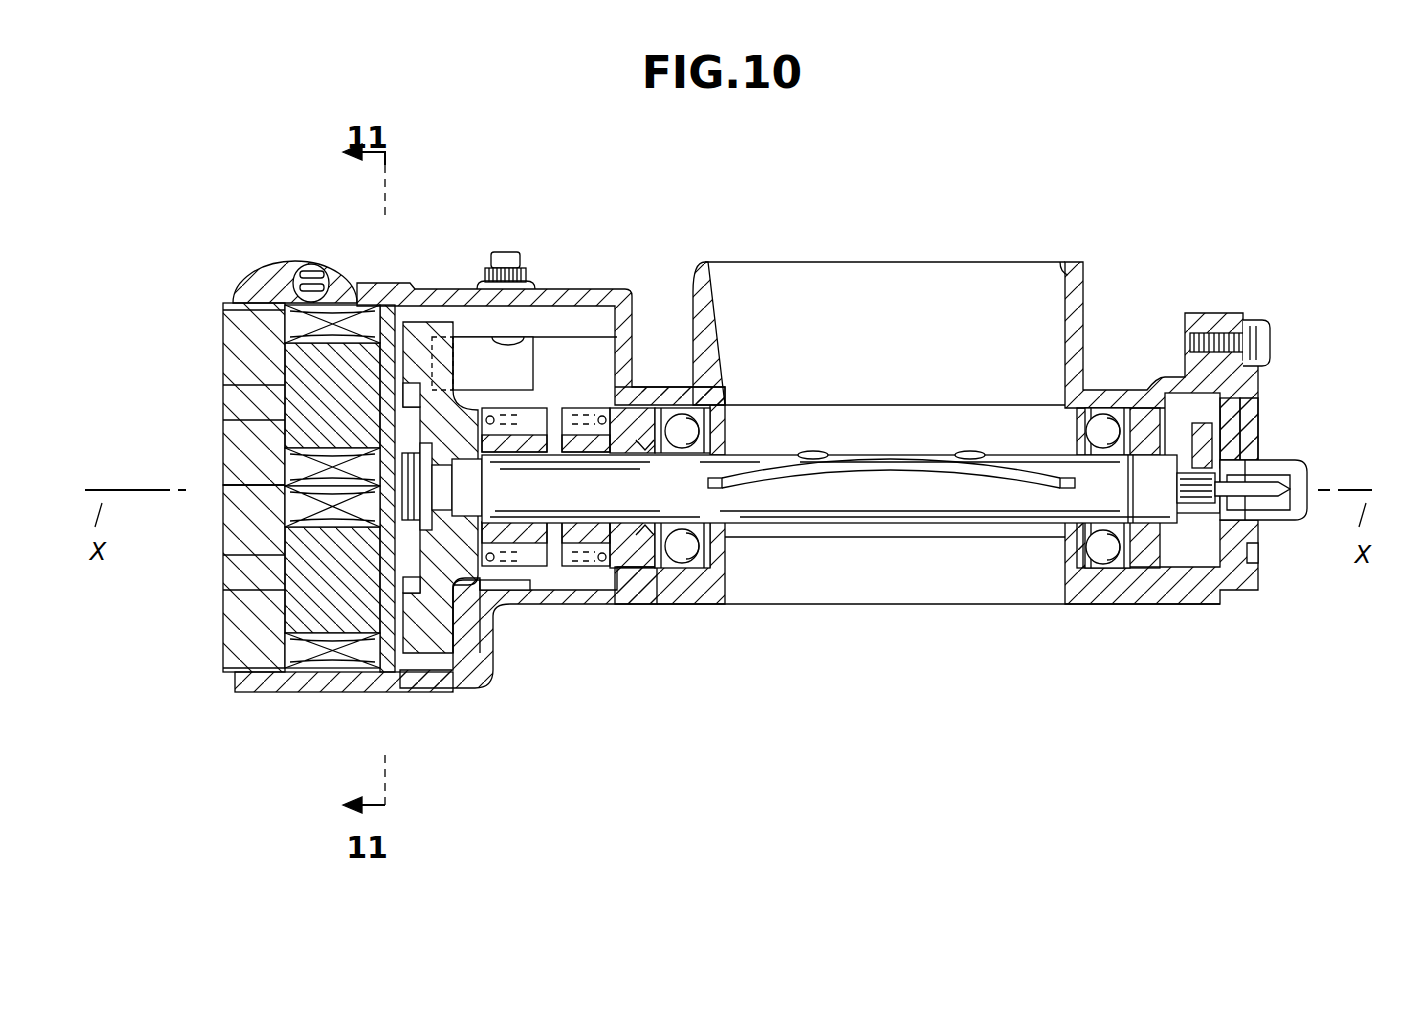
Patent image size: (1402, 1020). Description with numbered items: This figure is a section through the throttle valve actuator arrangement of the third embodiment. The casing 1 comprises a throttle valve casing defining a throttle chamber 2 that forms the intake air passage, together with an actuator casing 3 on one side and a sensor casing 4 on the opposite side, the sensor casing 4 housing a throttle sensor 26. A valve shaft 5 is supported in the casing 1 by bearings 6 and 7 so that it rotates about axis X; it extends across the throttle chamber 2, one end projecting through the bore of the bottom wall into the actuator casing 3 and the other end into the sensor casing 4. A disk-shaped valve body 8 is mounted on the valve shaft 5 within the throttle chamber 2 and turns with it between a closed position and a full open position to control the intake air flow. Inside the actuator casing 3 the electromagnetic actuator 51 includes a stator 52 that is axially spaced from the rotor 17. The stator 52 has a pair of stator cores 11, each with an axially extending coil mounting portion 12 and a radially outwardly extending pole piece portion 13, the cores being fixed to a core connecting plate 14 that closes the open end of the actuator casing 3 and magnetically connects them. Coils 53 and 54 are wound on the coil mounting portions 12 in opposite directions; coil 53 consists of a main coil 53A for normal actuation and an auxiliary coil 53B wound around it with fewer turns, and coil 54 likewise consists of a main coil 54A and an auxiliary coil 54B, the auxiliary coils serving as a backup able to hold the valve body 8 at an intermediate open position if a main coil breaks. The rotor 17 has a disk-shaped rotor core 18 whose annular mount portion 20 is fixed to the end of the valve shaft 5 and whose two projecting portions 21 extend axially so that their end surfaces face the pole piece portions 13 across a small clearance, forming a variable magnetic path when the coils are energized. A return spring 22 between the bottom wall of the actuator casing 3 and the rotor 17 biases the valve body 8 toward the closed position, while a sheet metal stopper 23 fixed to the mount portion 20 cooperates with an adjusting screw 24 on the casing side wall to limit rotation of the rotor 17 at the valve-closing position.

The casing 1 is at (710, 252).
The throttle chamber 2 is at (1060, 262).
The actuator casing 3 is at (603, 291).
The sensor casing 4 is at (1204, 312).
The valve shaft 5 is at (982, 505).
The bearing 6 is at (700, 569).
The bearing 7 is at (1104, 558).
The valve body 8 is at (868, 483).
The stator core 11 is at (283, 402).
The coil mounting portion 12 is at (283, 436).
The pole piece portion 13 is at (388, 316).
The core connecting plate 14 is at (270, 612).
The rotor 17 is at (528, 658).
The rotor core 18 is at (446, 657).
The mount portion 20 is at (481, 612).
The projecting portion 21 is at (419, 332).
The return spring 22 is at (495, 566).
The stopper 23 is at (483, 353).
The adjusting screw 24 is at (505, 254).
The throttle sensor 26 is at (1238, 582).
The electromagnetic actuator 51 is at (254, 276).
The stator 52 is at (292, 485).
The coil 53 is at (282, 330).
The main coil 53A is at (282, 318).
The auxiliary coil 53B is at (291, 298).
The coil 54 is at (290, 668).
The main coil 54A is at (292, 652).
The auxiliary coil 54B is at (292, 668).